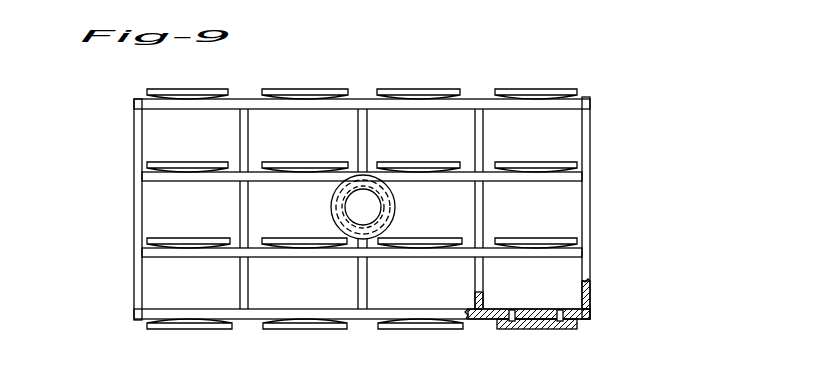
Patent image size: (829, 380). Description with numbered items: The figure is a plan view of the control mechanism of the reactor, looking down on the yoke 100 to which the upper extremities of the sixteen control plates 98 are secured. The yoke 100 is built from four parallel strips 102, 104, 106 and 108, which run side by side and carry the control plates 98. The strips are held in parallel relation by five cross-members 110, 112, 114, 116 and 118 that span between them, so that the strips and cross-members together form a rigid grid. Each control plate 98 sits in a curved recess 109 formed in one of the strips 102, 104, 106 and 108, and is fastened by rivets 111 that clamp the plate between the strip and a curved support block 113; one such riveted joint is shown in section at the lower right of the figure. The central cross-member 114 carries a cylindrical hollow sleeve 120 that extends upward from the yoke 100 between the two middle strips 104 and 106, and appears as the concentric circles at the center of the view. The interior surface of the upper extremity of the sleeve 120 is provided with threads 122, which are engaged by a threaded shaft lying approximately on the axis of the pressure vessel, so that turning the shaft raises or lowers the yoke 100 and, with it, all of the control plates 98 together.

The control plate 98 is at (186, 246).
The yoke 100 is at (389, 206).
The parallel strip 102 is at (352, 100).
The parallel strip 104 is at (313, 181).
The parallel strip 106 is at (520, 238).
The parallel strip 108 is at (157, 312).
The curved recess 109 is at (578, 303).
The cross-member 110 is at (586, 194).
The rivet 111 is at (558, 329).
The cross-member 112 is at (484, 143).
The curved support block 113 is at (414, 96).
The cross-member 114 is at (368, 143).
The cross-member 116 is at (250, 143).
The cross-member 118 is at (141, 143).
The cylindrical hollow sleeve 120 is at (359, 239).
The threads 122 is at (368, 211).